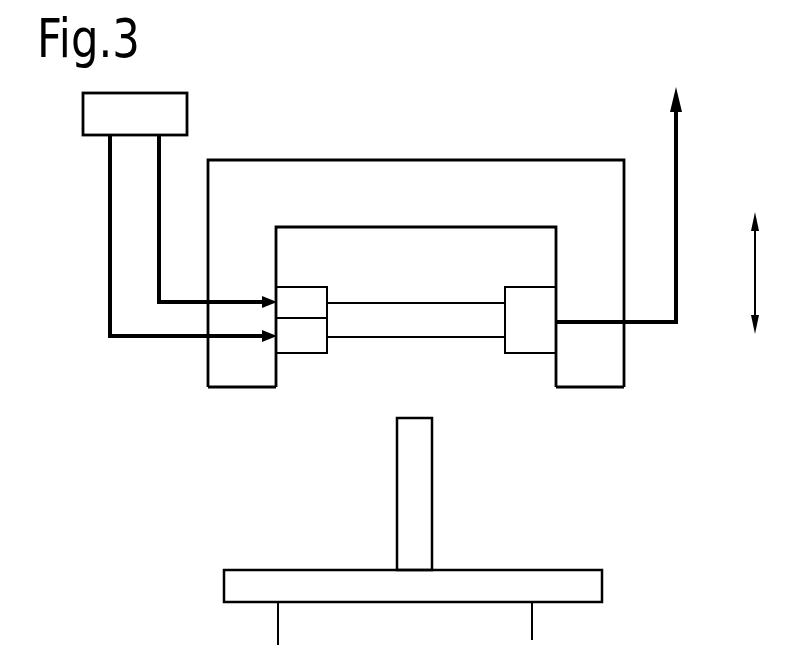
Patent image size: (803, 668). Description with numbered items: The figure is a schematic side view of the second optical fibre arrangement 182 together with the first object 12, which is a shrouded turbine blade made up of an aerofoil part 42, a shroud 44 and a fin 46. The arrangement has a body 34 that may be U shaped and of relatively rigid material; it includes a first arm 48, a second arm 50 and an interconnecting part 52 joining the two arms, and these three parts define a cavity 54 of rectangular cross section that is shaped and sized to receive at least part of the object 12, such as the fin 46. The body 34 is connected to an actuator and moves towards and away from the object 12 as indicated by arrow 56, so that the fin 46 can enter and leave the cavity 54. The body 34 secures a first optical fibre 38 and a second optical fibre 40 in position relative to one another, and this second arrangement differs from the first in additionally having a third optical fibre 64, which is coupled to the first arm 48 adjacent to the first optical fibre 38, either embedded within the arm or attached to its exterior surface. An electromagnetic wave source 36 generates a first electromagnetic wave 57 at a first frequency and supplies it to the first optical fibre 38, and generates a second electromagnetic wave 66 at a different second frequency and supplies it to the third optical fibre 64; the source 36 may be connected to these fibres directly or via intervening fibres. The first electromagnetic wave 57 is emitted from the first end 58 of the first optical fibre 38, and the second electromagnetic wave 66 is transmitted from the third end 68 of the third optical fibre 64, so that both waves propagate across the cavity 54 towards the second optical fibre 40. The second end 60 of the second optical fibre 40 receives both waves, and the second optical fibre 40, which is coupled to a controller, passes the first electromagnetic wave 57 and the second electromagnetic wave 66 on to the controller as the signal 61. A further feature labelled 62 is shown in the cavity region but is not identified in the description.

The first object 12 is at (433, 531).
The body 34 is at (520, 166).
The electromagnetic wave source 36 is at (190, 118).
The first optical fibre 38 is at (306, 297).
The second optical fibre 40 is at (525, 298).
The aerofoil part 42 is at (522, 620).
The shroud 44 is at (593, 580).
The fin 46 is at (415, 512).
The first arm 48 is at (254, 264).
The second arm 50 is at (609, 264).
The interconnecting part 52 is at (423, 211).
The cavity 54 is at (423, 264).
The arrow 56 is at (754, 270).
The first electromagnetic wave 57 is at (162, 222).
The first end 58 is at (328, 290).
The second end 60 is at (530, 350).
The signal 61 is at (678, 138).
The opening 62 is at (440, 374).
The third optical fibre 64 is at (305, 340).
The second electromagnetic wave 66 is at (112, 237).
The third end 68 is at (328, 350).
The second optical fibre arrangement 182 is at (119, 402).